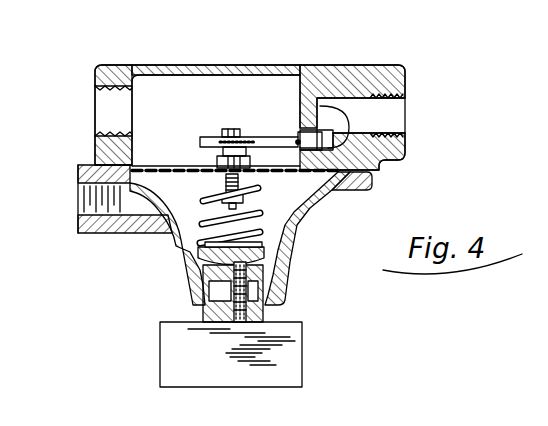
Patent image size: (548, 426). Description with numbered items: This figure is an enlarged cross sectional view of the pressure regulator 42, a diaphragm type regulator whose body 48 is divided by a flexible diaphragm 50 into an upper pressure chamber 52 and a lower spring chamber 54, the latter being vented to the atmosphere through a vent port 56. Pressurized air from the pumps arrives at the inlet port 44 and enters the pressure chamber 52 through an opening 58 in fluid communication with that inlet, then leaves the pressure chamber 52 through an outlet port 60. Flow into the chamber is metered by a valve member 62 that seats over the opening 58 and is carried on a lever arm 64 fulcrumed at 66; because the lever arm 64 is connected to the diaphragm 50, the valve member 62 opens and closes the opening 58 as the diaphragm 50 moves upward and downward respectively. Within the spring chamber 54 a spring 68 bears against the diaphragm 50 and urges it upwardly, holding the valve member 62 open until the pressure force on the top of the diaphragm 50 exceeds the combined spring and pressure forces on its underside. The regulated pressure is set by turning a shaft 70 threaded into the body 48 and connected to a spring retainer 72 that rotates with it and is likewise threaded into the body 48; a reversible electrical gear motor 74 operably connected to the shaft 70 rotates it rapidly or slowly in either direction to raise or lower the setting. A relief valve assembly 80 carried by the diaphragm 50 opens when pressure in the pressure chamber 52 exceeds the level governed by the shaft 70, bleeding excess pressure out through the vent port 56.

The pressure regulator 42 is at (409, 58).
The inlet port 44 is at (375, 104).
The body 48 is at (136, 65).
The diaphragm 50 is at (147, 165).
The pressure chamber 52 is at (166, 98).
The spring chamber 54 is at (150, 241).
The vent port 56 is at (80, 197).
The opening 58 is at (352, 121).
The outlet port 60 is at (110, 98).
The valve member 62 is at (378, 168).
The lever arm 64 is at (249, 130).
The fulcrum 66 is at (272, 138).
The spring 68 is at (250, 205).
The shaft 70 is at (258, 277).
The spring retainer 72 is at (268, 251).
The reversible electrical gear motor 74 is at (287, 328).
The relief valve assembly 80 is at (190, 158).